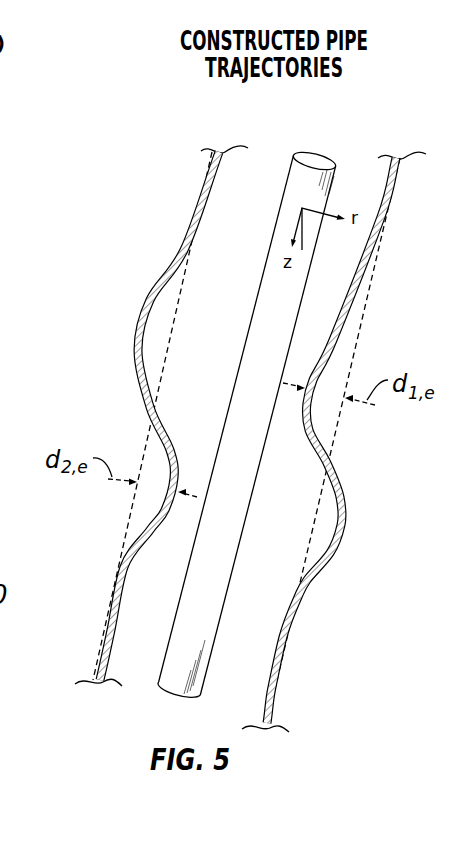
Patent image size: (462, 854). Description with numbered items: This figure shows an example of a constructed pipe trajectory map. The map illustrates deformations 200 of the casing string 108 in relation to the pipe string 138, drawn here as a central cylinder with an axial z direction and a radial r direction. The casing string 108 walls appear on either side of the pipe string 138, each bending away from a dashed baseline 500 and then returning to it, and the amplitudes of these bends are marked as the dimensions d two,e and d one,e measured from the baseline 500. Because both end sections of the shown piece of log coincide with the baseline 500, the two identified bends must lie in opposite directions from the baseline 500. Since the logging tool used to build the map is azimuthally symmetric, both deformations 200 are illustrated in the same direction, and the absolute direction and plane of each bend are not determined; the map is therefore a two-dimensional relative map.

The pipe string 138 is at (288, 170).
The baseline 500 is at (170, 337).
The deformation 200 is at (336, 591).
The casing string 108 is at (261, 437).